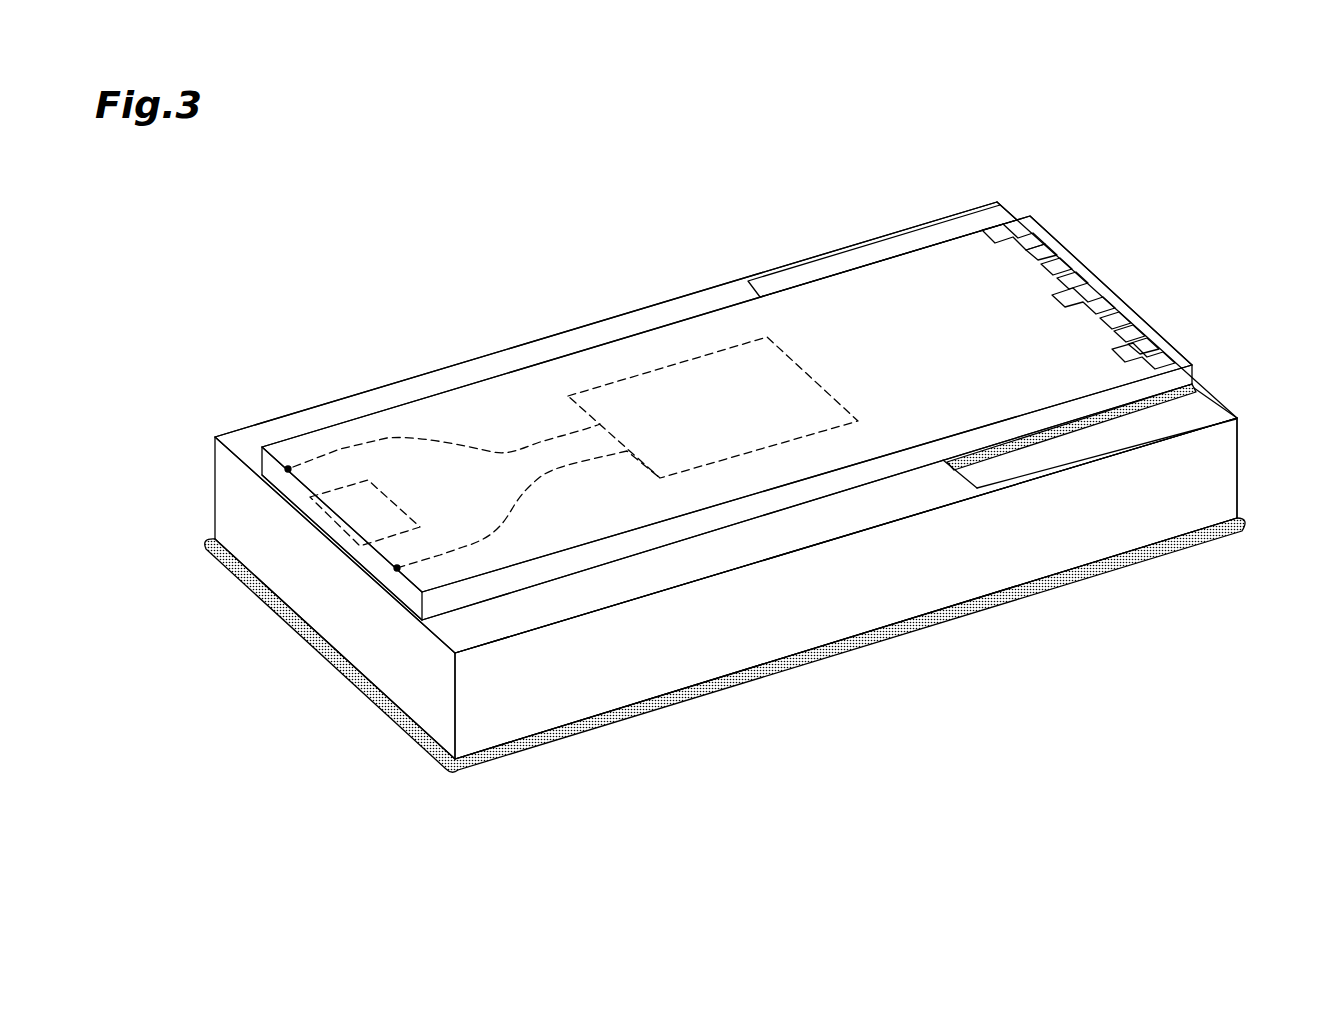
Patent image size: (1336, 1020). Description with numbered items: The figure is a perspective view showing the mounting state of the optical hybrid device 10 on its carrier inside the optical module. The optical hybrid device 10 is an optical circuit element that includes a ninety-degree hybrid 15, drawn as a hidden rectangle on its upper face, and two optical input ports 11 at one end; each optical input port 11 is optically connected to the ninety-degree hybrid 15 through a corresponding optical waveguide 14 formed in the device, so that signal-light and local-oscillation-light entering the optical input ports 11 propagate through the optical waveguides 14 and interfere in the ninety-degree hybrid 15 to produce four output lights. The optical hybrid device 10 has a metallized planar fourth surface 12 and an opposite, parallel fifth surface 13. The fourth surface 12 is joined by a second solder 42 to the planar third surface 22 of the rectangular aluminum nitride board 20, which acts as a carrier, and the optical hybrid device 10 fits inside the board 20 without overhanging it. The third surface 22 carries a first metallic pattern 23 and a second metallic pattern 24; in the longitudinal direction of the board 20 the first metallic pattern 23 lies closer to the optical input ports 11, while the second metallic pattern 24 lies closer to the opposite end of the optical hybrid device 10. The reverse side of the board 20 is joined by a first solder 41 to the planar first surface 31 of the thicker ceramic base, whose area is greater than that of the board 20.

The optical hybrid device 10 is at (620, 335).
The optical input ports 11 is at (287, 467).
The fourth surface 12 is at (598, 565).
The fifth surface 13 is at (563, 518).
The optical waveguide 14 is at (515, 445).
The 90-degree hybrid 15 is at (713, 350).
The board 20 is at (817, 612).
The third surface 22 is at (910, 500).
The first metallic pattern 23 is at (318, 503).
The second metallic pattern 24 is at (1200, 409).
The first surface 31 is at (994, 681).
The first solder 41 is at (657, 708).
The second solder 42 is at (1150, 407).